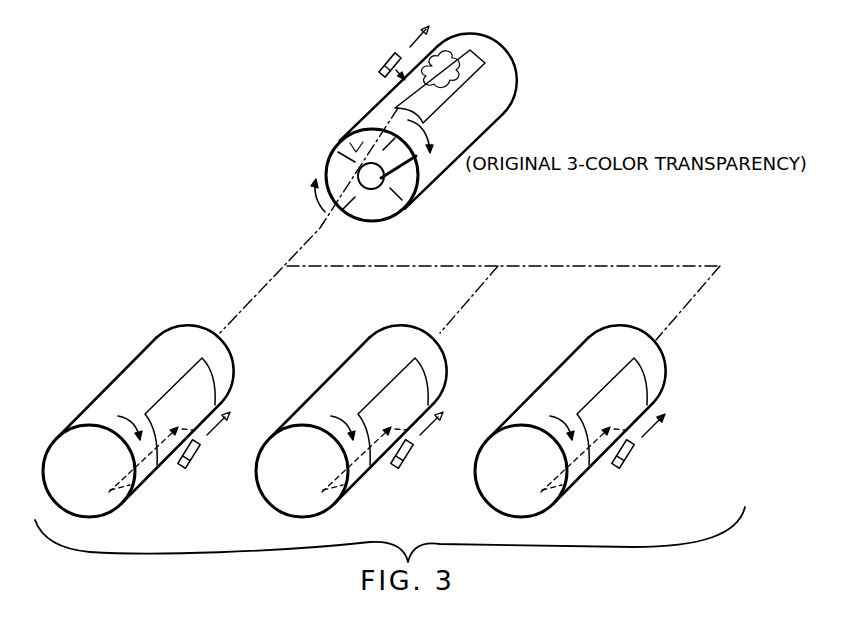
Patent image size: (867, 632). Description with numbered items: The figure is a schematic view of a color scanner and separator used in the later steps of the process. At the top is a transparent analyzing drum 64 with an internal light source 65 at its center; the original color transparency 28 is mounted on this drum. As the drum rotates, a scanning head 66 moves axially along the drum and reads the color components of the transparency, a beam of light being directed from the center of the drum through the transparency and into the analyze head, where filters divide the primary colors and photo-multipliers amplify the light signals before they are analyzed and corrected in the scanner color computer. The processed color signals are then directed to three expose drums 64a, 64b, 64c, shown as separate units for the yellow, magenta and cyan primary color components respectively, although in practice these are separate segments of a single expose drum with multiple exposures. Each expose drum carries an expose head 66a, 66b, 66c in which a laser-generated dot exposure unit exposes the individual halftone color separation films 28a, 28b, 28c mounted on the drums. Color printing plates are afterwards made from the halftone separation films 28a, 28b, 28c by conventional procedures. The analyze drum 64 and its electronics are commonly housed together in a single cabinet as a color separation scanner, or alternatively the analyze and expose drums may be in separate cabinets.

The analyzing drum 64 is at (493, 90).
The internal light source 65 is at (357, 173).
The original color transparency 28 is at (390, 98).
The scanning head 66 is at (382, 58).
The expose drum 64a is at (168, 421).
The halftone color separation film 28a is at (218, 411).
The expose head 66a is at (173, 454).
The expose drum 64b is at (383, 421).
The halftone color separation film 28b is at (432, 411).
The expose head 66b is at (388, 454).
The expose drum 64c is at (609, 421).
The halftone color separation film 28c is at (658, 411).
The expose head 66c is at (613, 455).